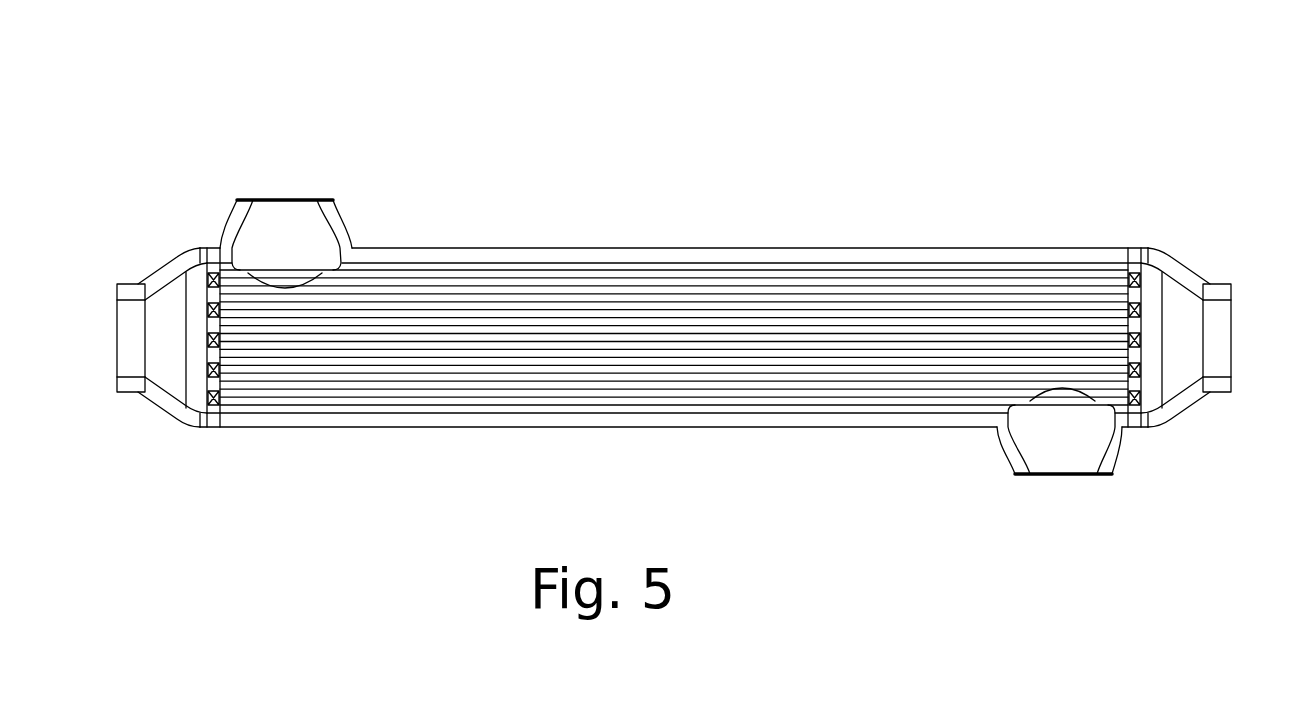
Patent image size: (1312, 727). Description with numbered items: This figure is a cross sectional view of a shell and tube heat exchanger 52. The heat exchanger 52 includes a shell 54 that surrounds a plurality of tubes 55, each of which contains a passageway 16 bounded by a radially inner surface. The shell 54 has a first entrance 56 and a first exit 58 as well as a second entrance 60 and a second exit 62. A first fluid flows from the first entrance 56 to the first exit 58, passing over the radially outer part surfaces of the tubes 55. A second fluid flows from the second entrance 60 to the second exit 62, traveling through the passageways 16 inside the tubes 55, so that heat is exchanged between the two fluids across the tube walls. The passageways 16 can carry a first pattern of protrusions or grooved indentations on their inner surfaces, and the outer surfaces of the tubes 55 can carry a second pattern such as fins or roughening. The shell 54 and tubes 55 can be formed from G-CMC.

The shell and tube heat exchanger 52 is at (897, 143).
The shell 54 is at (636, 246).
The tubes 55 is at (548, 325).
The passageway 16 is at (202, 286).
The first entrance 56 is at (284, 199).
The first exit 58 is at (1060, 476).
The second entrance 60 is at (117, 340).
The second exit 62 is at (1233, 318).